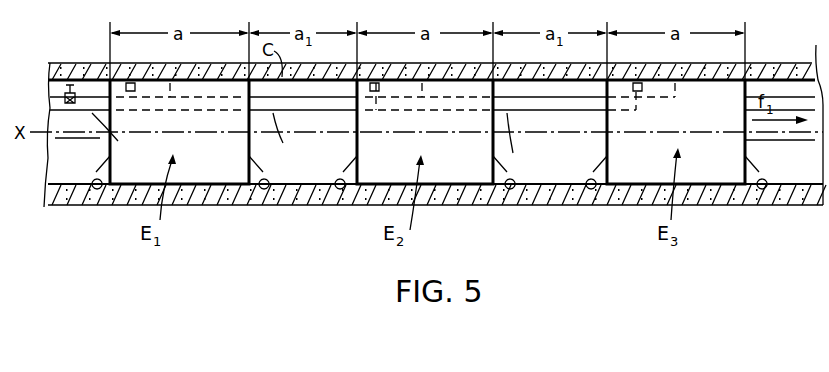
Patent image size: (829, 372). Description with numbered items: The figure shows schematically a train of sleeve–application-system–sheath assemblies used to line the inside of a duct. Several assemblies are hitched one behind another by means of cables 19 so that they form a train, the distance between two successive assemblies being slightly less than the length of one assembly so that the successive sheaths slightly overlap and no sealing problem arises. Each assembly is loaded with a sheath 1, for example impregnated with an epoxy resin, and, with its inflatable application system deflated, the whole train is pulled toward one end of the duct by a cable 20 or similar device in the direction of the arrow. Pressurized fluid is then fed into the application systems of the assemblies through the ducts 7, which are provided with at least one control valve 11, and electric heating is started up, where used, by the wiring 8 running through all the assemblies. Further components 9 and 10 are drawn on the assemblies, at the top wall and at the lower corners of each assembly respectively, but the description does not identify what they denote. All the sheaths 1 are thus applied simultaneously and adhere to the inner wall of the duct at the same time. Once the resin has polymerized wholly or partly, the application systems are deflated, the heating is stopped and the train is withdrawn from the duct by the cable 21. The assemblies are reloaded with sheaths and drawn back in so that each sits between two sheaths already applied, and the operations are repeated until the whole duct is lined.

The sheath 1 is at (188, 78).
The duct 7 is at (95, 97).
The wiring 8 is at (309, 140).
The current collector 9 is at (133, 83).
The roller 10 is at (97, 185).
The control valve 11 is at (70, 92).
The cable 19 is at (295, 143).
The cable 20 is at (782, 142).
The cable 21 is at (92, 140).